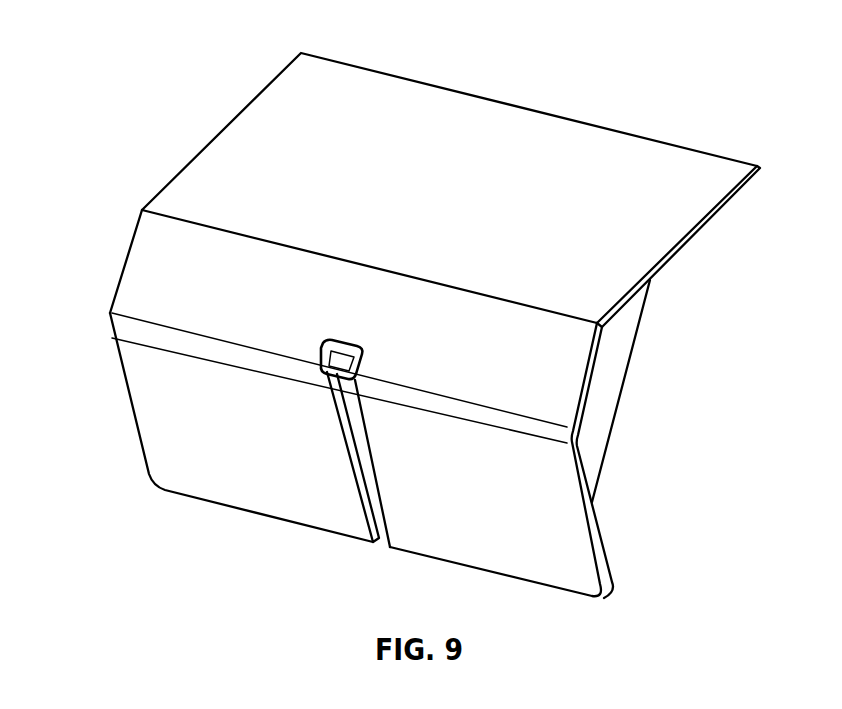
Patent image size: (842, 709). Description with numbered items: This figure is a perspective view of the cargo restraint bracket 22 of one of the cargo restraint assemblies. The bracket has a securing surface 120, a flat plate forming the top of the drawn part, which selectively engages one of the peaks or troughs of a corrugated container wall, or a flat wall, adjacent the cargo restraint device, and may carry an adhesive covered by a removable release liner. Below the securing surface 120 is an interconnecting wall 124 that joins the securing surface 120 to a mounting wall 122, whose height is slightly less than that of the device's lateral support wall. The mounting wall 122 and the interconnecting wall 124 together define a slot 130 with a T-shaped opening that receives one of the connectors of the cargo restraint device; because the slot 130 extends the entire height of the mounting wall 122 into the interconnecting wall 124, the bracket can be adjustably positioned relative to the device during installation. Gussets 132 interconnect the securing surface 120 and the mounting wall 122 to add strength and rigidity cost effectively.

The cargo restraint bracket 22 is at (637, 132).
The securing surface 120 is at (468, 193).
The interconnecting wall 124 is at (558, 346).
The gussets 132 is at (595, 425).
The mounting wall 122 is at (578, 555).
The slot 130 is at (340, 345).